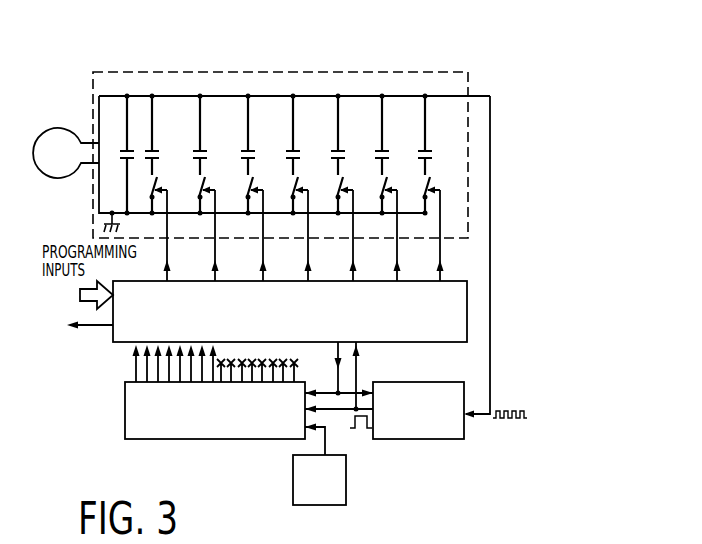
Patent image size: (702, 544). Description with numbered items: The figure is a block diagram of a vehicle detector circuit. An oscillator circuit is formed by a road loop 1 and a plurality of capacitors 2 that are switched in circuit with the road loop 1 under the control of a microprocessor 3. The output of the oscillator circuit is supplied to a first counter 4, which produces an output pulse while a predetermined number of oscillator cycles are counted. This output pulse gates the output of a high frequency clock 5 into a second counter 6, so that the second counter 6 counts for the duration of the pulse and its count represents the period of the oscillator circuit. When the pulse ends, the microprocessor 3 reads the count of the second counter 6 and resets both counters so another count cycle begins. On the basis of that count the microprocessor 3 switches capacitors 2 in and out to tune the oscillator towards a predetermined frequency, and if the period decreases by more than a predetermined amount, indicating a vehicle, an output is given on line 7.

The road loop 1 is at (53, 133).
The capacitors 2 is at (188, 115).
The microprocessor 3 is at (290, 311).
The first counter 4 is at (418, 424).
The high frequency clock 5 is at (346, 487).
The second counter 6 is at (215, 424).
The output line 7 is at (103, 326).